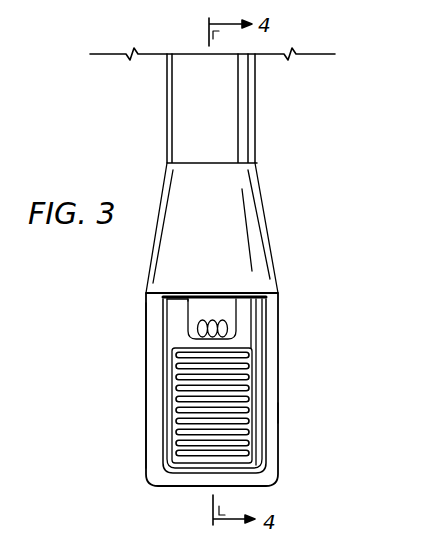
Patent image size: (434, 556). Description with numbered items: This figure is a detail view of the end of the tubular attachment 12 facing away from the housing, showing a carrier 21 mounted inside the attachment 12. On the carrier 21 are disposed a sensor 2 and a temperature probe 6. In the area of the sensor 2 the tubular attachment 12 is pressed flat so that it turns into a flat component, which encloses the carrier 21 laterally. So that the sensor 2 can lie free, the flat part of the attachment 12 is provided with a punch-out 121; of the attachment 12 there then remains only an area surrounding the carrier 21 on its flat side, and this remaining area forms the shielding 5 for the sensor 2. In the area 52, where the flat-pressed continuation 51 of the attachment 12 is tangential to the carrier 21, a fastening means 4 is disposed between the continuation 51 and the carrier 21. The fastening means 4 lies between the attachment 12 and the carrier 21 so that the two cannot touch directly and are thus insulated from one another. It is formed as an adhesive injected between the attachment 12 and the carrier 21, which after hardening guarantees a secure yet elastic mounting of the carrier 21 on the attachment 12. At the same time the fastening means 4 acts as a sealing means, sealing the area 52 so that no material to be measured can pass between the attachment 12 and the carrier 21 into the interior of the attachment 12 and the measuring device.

The sensor 2 is at (249, 428).
The fastening means 4 is at (166, 297).
The shielding 5 is at (139, 395).
The temperature probe 6 is at (229, 312).
The attachment 12 is at (249, 93).
The carrier 21 is at (157, 365).
The continuation 51 is at (337, 408).
The area 52 is at (292, 287).
The punch-out 121 is at (154, 440).